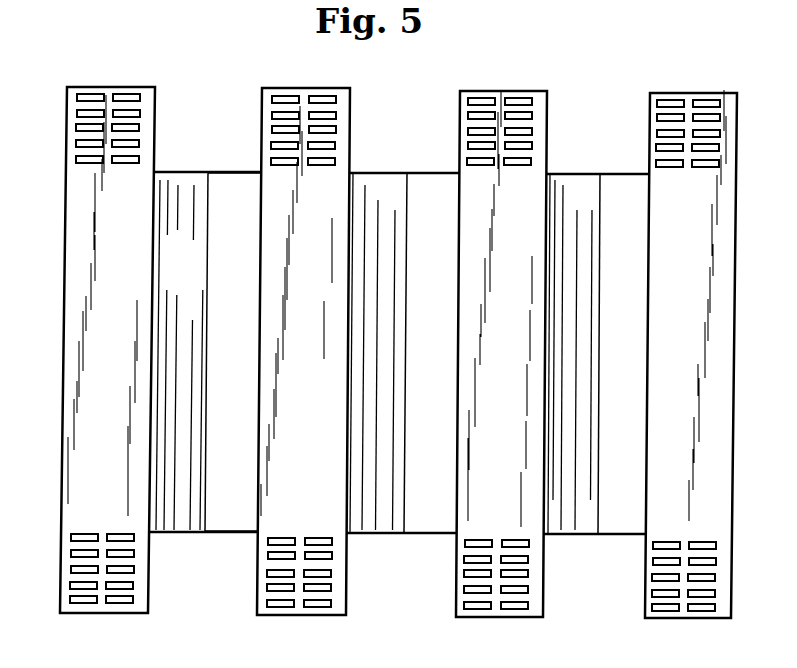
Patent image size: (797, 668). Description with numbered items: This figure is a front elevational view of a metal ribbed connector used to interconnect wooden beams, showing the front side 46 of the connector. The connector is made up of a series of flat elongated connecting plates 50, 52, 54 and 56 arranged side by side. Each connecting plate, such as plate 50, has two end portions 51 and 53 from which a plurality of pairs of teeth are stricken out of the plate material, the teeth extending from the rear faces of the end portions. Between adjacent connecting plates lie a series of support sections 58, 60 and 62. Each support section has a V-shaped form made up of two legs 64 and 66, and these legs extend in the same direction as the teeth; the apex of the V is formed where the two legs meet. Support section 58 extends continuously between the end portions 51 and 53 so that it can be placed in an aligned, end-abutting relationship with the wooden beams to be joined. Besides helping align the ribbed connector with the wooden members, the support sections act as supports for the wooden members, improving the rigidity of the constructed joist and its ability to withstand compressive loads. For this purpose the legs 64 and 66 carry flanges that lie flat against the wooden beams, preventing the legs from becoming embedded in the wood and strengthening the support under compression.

The front side 46 is at (223, 98).
The connecting plate 50 is at (85, 350).
The end portion 51 is at (78, 152).
The connecting plate 52 is at (314, 364).
The end portion 53 is at (73, 582).
The connecting plate 54 is at (511, 364).
The connecting plate 56 is at (698, 364).
The support section 58 is at (205, 377).
The support section 60 is at (383, 533).
The support section 62 is at (577, 534).
The leg 64 is at (187, 264).
The leg 66 is at (245, 264).